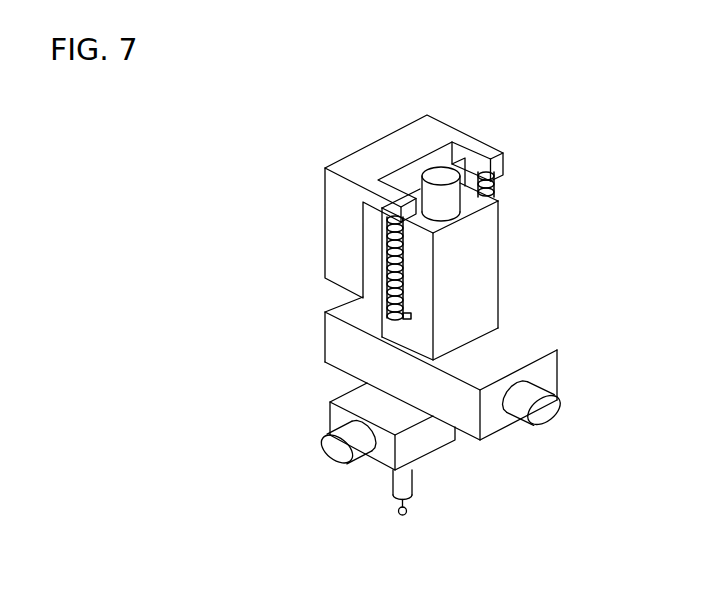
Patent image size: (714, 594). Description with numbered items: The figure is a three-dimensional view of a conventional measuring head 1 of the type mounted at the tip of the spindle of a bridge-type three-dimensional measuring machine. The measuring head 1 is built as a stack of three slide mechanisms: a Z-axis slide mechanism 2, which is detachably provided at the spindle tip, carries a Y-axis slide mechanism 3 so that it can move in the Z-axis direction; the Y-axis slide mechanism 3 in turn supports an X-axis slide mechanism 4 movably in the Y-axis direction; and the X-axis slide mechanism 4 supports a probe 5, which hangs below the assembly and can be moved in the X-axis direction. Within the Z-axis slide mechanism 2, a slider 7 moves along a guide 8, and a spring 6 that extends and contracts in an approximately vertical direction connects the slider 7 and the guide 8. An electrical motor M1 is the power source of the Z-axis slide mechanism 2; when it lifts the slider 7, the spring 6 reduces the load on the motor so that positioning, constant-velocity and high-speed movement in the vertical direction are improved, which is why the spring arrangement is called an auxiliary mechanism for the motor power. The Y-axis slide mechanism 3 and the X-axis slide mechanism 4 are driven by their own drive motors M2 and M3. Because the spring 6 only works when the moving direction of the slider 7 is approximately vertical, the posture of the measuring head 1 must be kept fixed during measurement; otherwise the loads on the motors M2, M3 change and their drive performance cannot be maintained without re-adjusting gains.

The measuring head 1 is at (565, 81).
The Z-axis slide mechanism 2 is at (597, 153).
The Y-axis slide mechanism 3 is at (597, 352).
The X-axis slide mechanism 4 is at (457, 446).
The probe 5 is at (420, 494).
The spring 6 is at (383, 257).
The slider 7 is at (520, 205).
The guide 8 is at (341, 211).
The electrical motor M1 is at (437, 171).
The drive motor M2 is at (546, 419).
The drive motor M3 is at (338, 450).